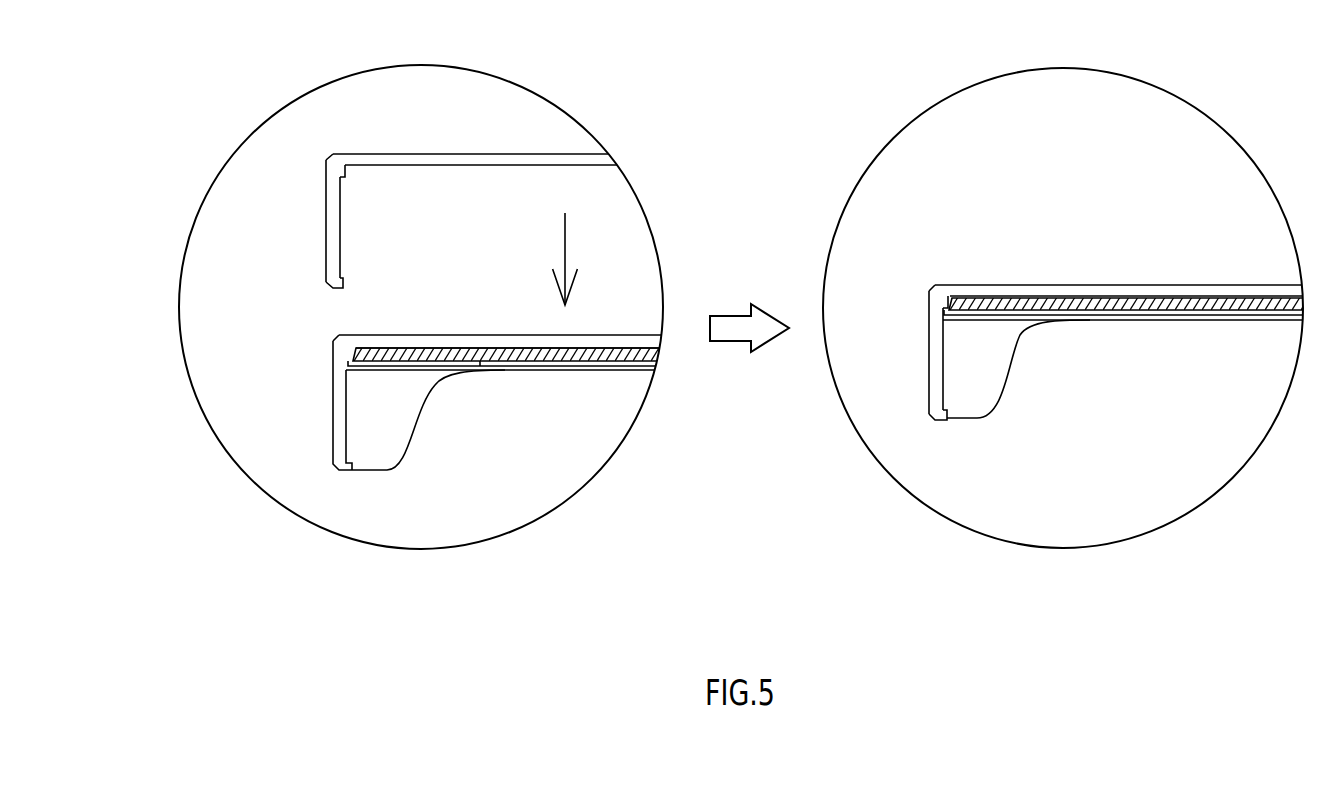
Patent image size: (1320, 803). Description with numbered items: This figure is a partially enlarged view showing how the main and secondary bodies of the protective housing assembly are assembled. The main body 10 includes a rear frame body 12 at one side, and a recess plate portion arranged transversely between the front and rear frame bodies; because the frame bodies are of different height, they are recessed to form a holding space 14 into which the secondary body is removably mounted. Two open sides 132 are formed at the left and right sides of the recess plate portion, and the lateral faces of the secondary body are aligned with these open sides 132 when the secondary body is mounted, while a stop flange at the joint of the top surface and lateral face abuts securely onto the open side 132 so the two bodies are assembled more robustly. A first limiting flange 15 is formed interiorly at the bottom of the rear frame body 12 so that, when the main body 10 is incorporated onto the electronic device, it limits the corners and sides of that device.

The main body 10 is at (787, 383).
The rear frame body 12 is at (333, 385).
The open side 132 is at (352, 355).
The holding space 14 is at (468, 345).
The first limiting flange 15 is at (355, 462).